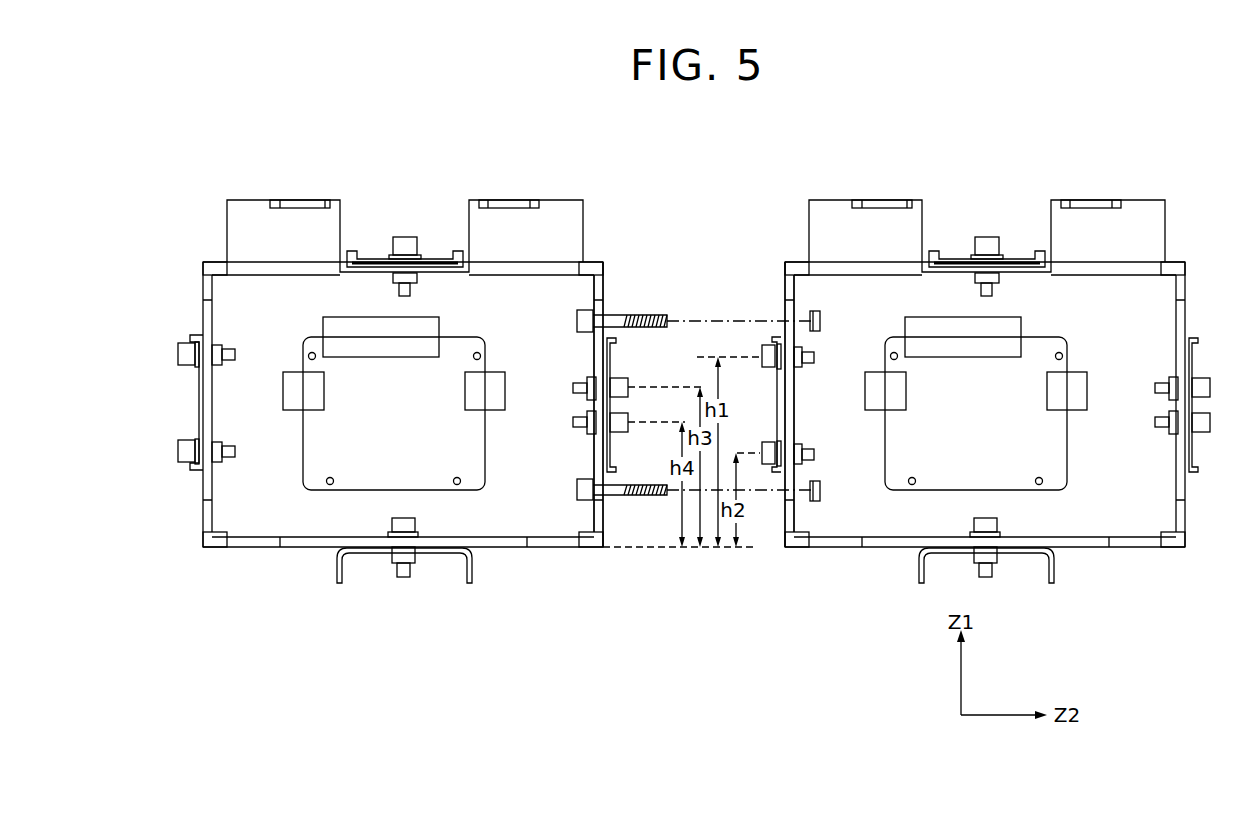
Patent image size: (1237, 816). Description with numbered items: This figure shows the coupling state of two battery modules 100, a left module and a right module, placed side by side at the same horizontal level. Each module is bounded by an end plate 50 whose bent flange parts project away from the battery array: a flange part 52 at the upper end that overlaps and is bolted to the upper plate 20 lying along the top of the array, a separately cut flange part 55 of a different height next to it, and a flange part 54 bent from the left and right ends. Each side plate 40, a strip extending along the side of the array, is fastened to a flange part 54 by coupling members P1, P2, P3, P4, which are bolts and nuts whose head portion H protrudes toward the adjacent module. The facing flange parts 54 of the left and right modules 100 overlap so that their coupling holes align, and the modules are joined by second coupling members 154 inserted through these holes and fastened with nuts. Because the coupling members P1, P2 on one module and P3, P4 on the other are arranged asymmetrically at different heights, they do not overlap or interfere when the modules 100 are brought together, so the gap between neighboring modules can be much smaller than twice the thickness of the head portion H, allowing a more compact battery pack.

The end plate 50 is at (570, 190).
The flange part 52 is at (371, 266).
The upper plate 20 is at (436, 256).
The flange part 55 is at (503, 204).
The flange part 54 is at (601, 287).
The side plate 40 is at (607, 345).
The second coupling member 154 is at (577, 490).
The head portion H is at (766, 345).
The coupling member P1 is at (814, 355).
The coupling member P2 is at (814, 452).
The coupling member P3 is at (573, 388).
The coupling member P4 is at (573, 422).
The battery module 100 is at (366, 441).